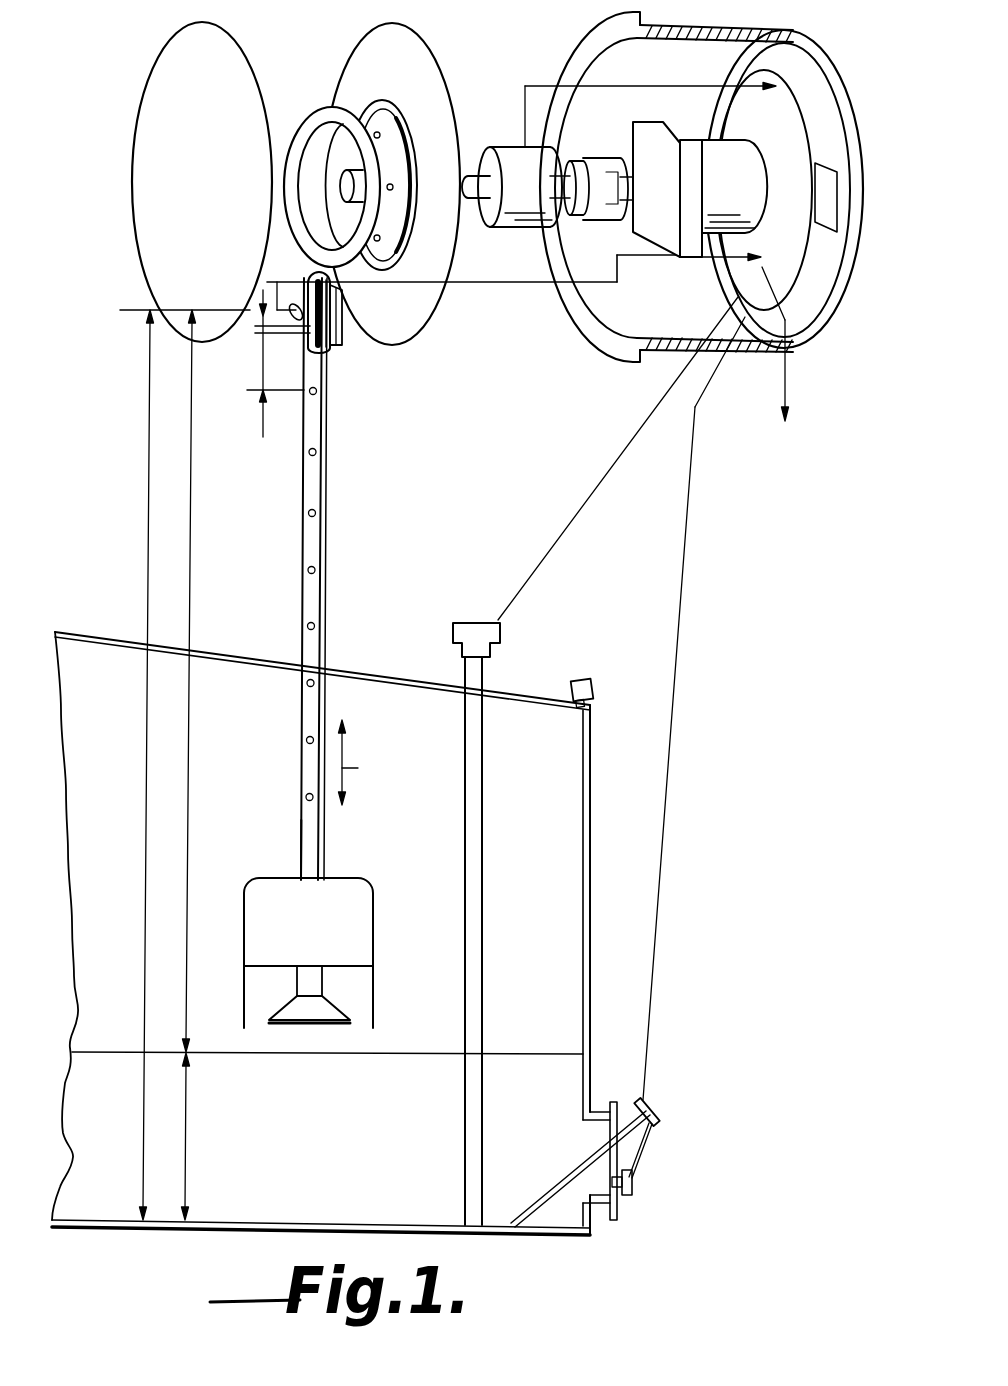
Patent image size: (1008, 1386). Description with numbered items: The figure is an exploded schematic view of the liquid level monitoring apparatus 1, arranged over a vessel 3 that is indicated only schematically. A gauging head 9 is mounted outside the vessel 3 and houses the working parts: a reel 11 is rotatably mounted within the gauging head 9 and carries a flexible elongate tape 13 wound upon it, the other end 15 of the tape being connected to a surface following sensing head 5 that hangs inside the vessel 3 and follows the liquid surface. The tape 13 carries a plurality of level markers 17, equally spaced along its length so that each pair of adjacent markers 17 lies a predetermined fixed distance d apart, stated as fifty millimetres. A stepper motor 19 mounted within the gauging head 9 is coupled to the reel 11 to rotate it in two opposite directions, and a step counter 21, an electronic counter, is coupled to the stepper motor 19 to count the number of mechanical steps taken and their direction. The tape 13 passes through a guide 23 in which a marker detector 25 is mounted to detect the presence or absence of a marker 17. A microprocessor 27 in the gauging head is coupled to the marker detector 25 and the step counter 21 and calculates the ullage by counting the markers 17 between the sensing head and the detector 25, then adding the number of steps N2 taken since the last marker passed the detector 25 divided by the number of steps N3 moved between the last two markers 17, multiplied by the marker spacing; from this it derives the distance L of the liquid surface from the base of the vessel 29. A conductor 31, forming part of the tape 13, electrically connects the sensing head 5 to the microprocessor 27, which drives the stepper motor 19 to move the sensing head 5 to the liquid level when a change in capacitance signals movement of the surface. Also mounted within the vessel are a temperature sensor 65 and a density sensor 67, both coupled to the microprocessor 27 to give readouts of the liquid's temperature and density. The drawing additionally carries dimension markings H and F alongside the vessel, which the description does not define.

The apparatus 1 is at (112, 113).
The vessel 3 is at (592, 1022).
The surface following sensing head 5 is at (262, 914).
The gauging head 9 is at (812, 88).
The reel 11 is at (305, 123).
The flexible elongate tape 13 is at (328, 483).
The other end of the tape 15 is at (323, 880).
The level markers 17 is at (302, 797).
The stepper motor 19 is at (700, 189).
The step counter 21 is at (510, 160).
The guide 23 is at (345, 342).
The marker detector 25 is at (295, 303).
The microprocessor 27 is at (783, 283).
The base of the vessel 29 is at (137, 1222).
The conductor 31 is at (326, 823).
The temperature sensor 65 is at (484, 622).
The density sensor 67 is at (656, 1110).
The number of steps since last marker N2 is at (255, 326).
The number of steps between last two markers N3 is at (262, 389).
The height H is at (148, 765).
The fluid level F is at (105, 1052).
The distance of surface from vessel base L is at (207, 1136).
The distance between adjacent markers d is at (368, 762).